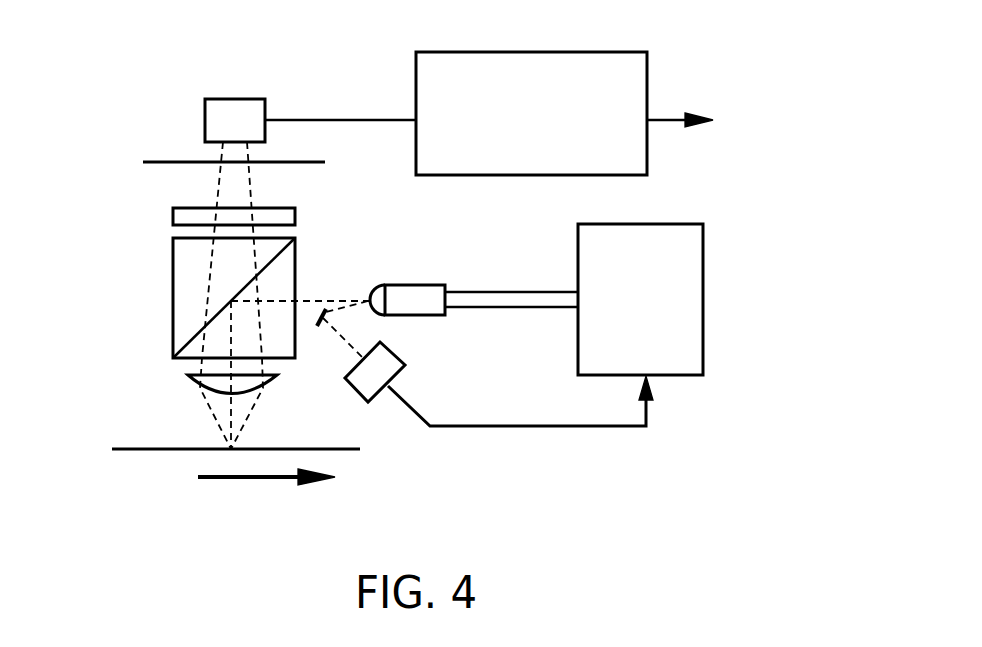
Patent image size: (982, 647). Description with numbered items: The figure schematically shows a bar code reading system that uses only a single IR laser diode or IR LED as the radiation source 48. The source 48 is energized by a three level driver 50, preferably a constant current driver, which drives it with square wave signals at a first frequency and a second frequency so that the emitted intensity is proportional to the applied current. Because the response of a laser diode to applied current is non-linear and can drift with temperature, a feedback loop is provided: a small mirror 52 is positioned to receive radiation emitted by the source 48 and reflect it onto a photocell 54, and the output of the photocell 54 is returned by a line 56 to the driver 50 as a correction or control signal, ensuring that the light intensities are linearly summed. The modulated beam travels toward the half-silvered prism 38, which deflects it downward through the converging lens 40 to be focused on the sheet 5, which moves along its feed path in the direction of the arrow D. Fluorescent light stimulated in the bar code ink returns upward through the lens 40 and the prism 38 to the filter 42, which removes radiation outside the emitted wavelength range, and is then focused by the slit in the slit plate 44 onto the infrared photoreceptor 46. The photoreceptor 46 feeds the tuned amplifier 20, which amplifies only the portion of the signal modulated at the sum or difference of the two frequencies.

The tuned amplifier 20 is at (543, 58).
The infrared photoreceptor 46 is at (205, 120).
The slit plate 44 is at (172, 164).
The filter 42 is at (173, 215).
The half-silvered prism 38 is at (173, 310).
The converging lens 40 is at (205, 378).
The sheet 5 is at (128, 449).
The radiation source 48 is at (400, 290).
The three level driver 50 is at (697, 275).
The small mirror 52 is at (316, 328).
The photocell 54 is at (393, 350).
The line 56 is at (559, 426).
The direction of sheet movement D is at (208, 482).